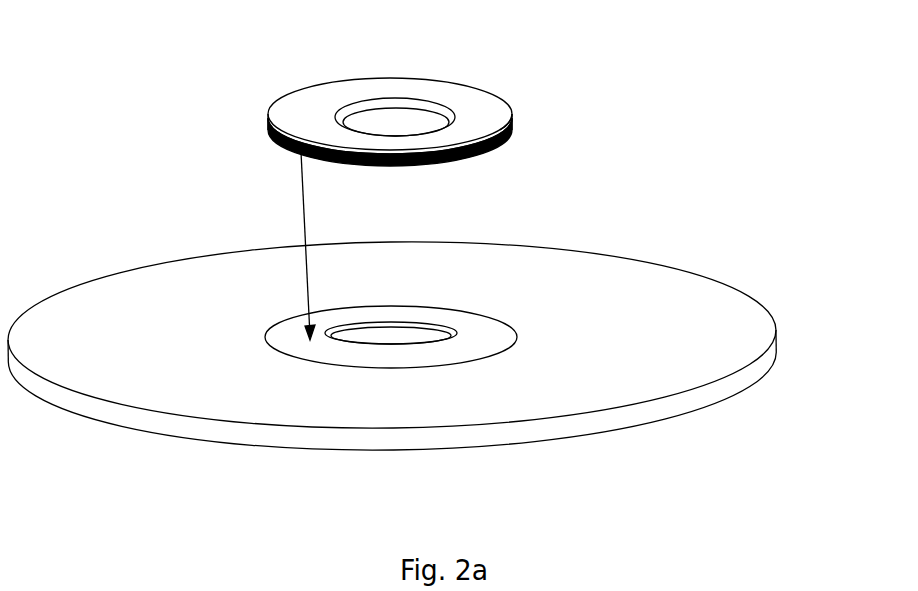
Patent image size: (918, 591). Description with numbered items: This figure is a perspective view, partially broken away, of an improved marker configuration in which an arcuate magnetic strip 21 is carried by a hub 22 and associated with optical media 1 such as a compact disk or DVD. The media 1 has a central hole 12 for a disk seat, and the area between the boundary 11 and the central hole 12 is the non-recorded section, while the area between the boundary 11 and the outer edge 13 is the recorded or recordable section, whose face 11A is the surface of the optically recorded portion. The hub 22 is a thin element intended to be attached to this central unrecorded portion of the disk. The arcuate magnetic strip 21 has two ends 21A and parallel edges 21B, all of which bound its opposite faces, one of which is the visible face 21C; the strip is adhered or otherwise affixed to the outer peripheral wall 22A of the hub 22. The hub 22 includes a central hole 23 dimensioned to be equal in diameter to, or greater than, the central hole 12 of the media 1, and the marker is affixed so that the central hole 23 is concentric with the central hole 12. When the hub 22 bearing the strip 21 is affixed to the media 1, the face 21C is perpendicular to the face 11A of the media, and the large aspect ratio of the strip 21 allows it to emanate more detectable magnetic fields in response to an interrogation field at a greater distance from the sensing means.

The media 1 is at (427, 370).
The boundary of the recorded section 11 is at (518, 337).
The face of the optically recorded section 11A is at (743, 335).
The central hole 12 is at (425, 343).
The outer boundary of the recorded section 13 is at (743, 293).
The arcuate magnetic strip 21 is at (397, 180).
The ends 21A is at (510, 136).
The parallel edges 21B is at (497, 145).
The face 21C is at (480, 155).
The hub 22 is at (490, 102).
The outer peripheral wall 22A is at (513, 110).
The central hole 23 is at (424, 99).